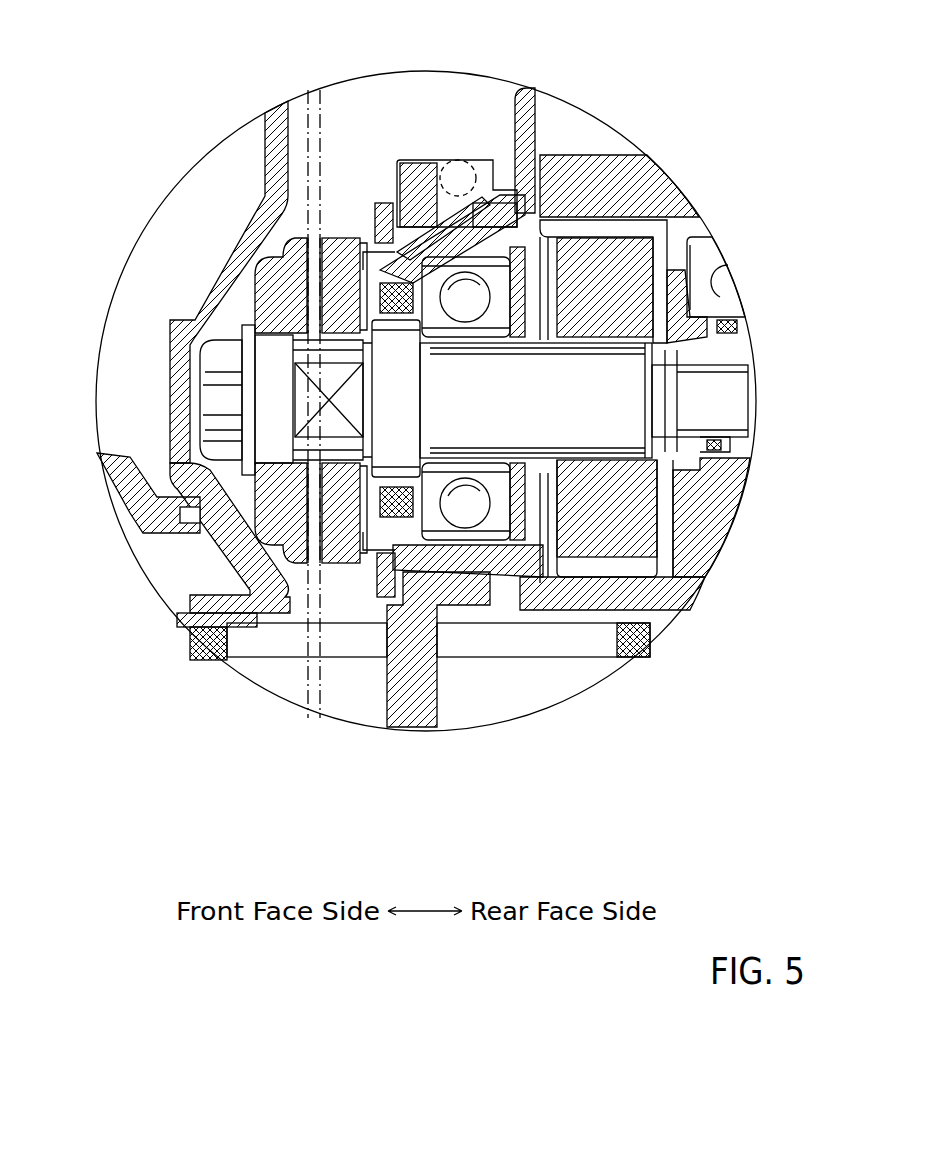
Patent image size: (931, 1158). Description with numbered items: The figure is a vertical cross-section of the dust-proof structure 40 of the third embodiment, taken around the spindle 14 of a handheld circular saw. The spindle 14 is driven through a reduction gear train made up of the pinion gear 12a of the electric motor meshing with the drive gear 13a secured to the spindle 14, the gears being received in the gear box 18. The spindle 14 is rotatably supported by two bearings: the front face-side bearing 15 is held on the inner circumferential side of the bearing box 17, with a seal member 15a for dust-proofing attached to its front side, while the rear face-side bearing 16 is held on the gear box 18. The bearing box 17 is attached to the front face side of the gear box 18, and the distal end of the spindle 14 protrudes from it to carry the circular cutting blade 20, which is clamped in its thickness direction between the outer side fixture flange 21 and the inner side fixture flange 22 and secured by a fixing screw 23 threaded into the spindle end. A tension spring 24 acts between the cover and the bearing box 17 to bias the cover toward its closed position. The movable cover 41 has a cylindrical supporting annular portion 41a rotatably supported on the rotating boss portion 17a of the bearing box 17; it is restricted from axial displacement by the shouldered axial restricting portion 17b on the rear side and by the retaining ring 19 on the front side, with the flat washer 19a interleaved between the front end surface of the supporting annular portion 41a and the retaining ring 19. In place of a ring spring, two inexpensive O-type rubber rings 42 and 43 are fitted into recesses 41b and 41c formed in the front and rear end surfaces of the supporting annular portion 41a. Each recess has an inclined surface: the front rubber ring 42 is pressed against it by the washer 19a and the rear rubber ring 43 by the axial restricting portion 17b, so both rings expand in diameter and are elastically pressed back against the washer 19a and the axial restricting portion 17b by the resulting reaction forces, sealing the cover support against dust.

The pinion gear 12a is at (627, 197).
The drive gear 13a is at (613, 515).
The spindle 14 is at (547, 396).
The bearing 15 is at (478, 600).
The seal member 15a is at (393, 296).
The bearing 16 is at (733, 443).
The bearing box 17 is at (610, 250).
The rotating boss portion 17a is at (432, 160).
The axial restricting portion 17b is at (510, 598).
The gear box 18 is at (512, 92).
The retaining ring 19 is at (303, 177).
The washer 19a is at (345, 150).
The cutting blade 20 is at (297, 620).
The outer side fixture flange 21 is at (283, 268).
The inner side fixture flange 22 is at (290, 513).
The fixing screw 23 is at (220, 397).
The tension spring 24 is at (456, 160).
The dust-proof structure 40 is at (395, 142).
The movable cover 41 is at (393, 700).
The supporting annular portion 41a is at (522, 160).
The recess 41b is at (440, 190).
The recess 41c is at (520, 197).
The rubber ring 42 is at (270, 112).
The rubber ring 43 is at (560, 230).